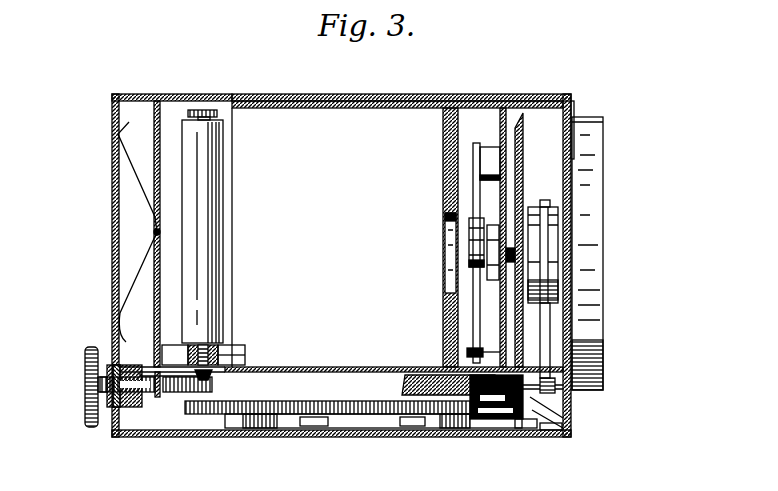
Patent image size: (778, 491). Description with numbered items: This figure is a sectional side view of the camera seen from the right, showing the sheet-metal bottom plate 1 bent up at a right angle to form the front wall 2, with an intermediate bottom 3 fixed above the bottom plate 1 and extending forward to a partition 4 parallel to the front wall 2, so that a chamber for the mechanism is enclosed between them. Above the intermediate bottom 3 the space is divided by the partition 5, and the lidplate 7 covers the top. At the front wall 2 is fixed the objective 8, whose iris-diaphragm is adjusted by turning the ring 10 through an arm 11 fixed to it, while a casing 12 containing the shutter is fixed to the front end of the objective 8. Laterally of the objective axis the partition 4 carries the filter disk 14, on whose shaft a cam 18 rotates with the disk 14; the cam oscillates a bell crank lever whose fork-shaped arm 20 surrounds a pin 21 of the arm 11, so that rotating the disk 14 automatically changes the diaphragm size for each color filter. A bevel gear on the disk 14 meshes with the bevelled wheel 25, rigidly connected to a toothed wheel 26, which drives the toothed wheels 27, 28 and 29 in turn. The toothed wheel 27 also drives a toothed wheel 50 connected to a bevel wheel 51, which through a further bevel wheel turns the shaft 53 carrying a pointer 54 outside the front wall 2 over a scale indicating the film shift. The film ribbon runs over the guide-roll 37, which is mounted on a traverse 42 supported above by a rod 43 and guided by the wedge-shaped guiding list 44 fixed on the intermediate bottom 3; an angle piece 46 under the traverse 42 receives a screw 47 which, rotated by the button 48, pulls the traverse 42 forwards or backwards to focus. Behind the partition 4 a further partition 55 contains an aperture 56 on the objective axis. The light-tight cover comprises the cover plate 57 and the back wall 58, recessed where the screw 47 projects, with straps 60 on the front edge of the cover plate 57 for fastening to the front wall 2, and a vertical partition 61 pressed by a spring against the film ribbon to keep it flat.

The bottom plate 1 is at (318, 437).
The front wall 2 is at (571, 403).
The intermediate bottom 3 is at (310, 373).
The partition 4 is at (500, 118).
The partition 5 is at (350, 94).
The lidplate 7 is at (298, 108).
The objective 8 is at (535, 240).
The ring 10 is at (547, 287).
The arm 11 is at (545, 330).
The casing 12 is at (600, 148).
The disk 14 is at (520, 120).
The cam 18 is at (472, 258).
The arm 20 is at (477, 300).
The pin 21 is at (467, 350).
The bevelled wheel 25 is at (407, 378).
The toothed wheel 26 is at (437, 398).
The toothed wheel 27 is at (395, 419).
The toothed wheel 28 is at (236, 414).
The toothed wheel 29 is at (196, 413).
The guide-roll 37 is at (192, 197).
The traverse 42 is at (225, 342).
The rod 43 is at (207, 112).
The guiding list 44 is at (245, 350).
The angle piece 46 is at (130, 433).
The screw 47 is at (182, 394).
The button 48 is at (86, 369).
The toothed wheel 50 is at (555, 437).
The bevel wheel 51 is at (530, 437).
The shaft 53 is at (568, 420).
The pointer 54 is at (572, 408).
The partition 55 is at (445, 152).
The aperture 56 is at (448, 233).
The cover plate 57 is at (193, 95).
The back wall 58 is at (112, 159).
The straps 60 is at (574, 108).
The vertical partition 61 is at (154, 131).